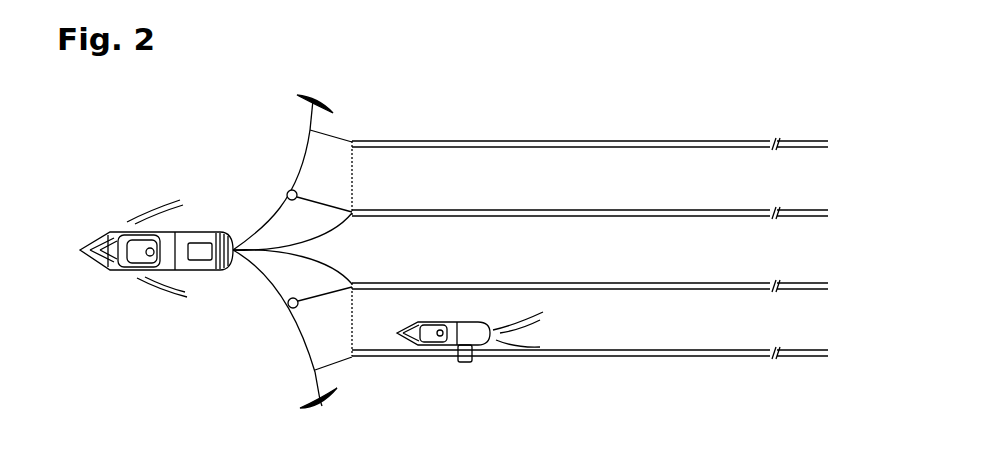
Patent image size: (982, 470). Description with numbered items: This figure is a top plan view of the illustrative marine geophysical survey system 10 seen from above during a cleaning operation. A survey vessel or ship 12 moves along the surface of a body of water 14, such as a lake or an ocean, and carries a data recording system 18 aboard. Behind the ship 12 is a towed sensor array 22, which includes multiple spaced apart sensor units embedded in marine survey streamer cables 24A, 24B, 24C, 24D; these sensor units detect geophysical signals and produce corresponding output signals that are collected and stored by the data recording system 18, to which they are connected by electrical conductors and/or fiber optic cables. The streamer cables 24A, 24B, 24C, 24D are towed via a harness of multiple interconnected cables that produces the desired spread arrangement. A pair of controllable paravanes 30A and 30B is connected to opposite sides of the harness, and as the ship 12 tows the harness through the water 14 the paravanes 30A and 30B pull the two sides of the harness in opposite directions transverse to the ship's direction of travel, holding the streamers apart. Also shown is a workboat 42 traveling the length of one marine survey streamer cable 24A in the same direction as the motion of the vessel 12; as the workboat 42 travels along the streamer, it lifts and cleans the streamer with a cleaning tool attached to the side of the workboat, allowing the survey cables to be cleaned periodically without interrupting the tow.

The marine geophysical survey system 10 is at (248, 87).
The survey vessel 12 is at (156, 240).
The body of water 14 is at (197, 373).
The data recording system 18 is at (199, 243).
The sensor array 22 is at (594, 242).
The marine survey streamer cable 24A is at (378, 357).
The marine survey streamer cable 24B is at (378, 283).
The marine survey streamer cable 24C is at (375, 210).
The marine survey streamer cable 24D is at (375, 141).
The controllable paravane 30A is at (322, 406).
The controllable paravane 30B is at (313, 100).
The workboat 42 is at (467, 320).